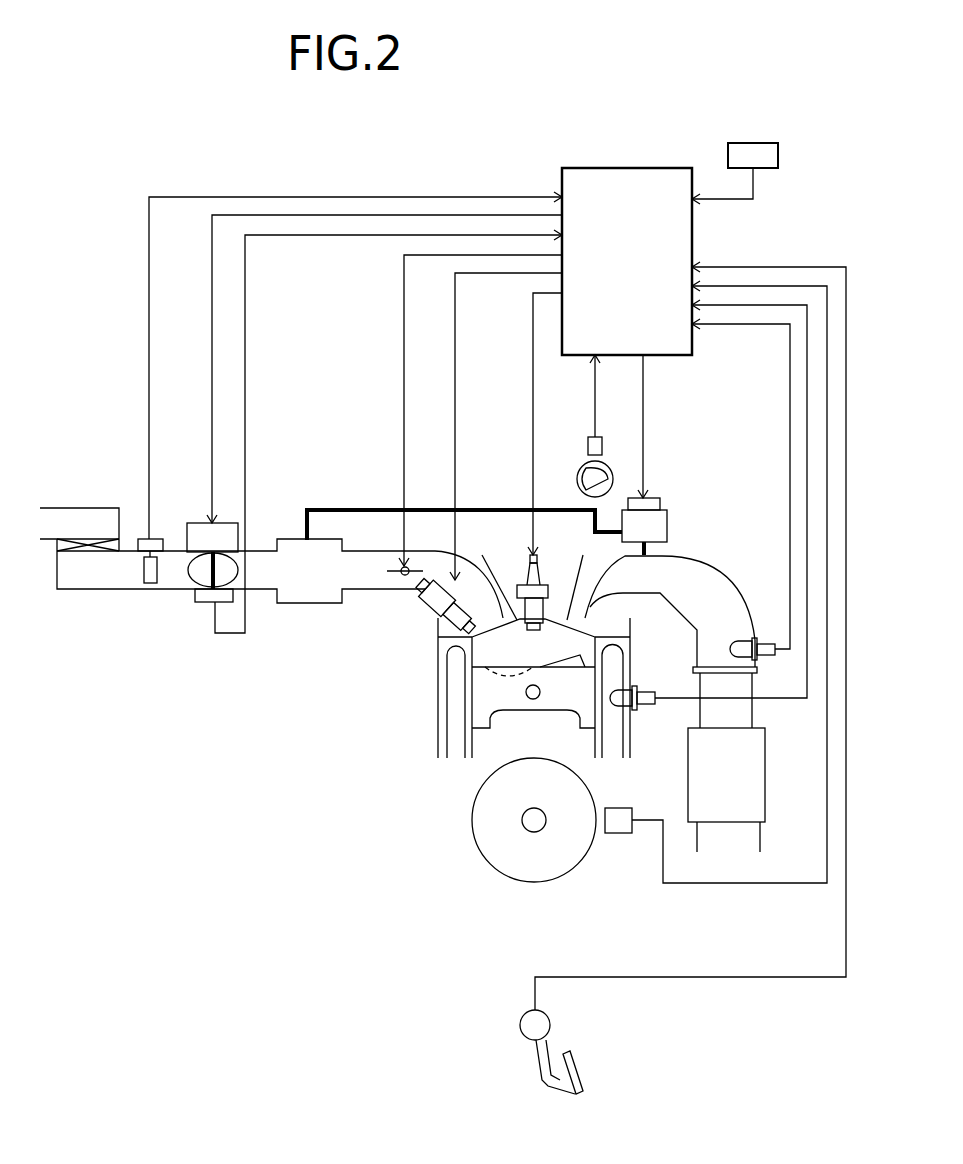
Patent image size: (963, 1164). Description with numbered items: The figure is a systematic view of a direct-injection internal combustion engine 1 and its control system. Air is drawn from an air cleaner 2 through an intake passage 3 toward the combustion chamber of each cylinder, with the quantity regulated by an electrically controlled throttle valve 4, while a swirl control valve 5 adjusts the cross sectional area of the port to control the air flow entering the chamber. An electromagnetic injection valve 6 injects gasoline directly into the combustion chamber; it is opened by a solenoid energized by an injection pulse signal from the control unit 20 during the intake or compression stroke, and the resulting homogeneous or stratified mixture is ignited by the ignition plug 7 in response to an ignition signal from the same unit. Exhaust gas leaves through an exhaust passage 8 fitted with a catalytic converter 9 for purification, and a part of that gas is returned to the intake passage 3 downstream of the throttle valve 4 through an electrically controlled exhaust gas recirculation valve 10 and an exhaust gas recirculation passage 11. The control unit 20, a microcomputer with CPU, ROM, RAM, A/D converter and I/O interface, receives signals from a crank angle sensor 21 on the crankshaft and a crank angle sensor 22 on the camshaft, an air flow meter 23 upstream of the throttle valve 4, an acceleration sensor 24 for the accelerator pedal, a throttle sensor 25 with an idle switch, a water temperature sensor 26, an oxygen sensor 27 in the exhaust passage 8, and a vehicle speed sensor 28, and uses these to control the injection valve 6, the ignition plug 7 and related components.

The internal combustion engine 1 is at (430, 718).
The air cleaner 2 is at (99, 508).
The intake passage 3 is at (125, 585).
The electrically controlled throttle valve 4 is at (203, 523).
The swirl control valve 5 is at (388, 575).
The electromagnetic injection valve 6 is at (435, 600).
The ignition plug 7 is at (525, 580).
The exhaust passage 8 is at (708, 585).
The catalytic converter 9 is at (752, 772).
The electrically controlled exhaust gas recirculation valve 10 is at (667, 518).
The exhaust gas recirculation passage 11 is at (358, 510).
The control unit 20 is at (562, 168).
The crank angle sensor 21 is at (618, 835).
The crank angle sensor 22 is at (590, 437).
The air flow meter 23 is at (150, 585).
The acceleration sensor 24 is at (518, 1022).
The throttle sensor 25 is at (200, 603).
The water temperature sensor 26 is at (645, 705).
The oxygen sensor 27 is at (770, 657).
The vehicle speed sensor 28 is at (728, 150).